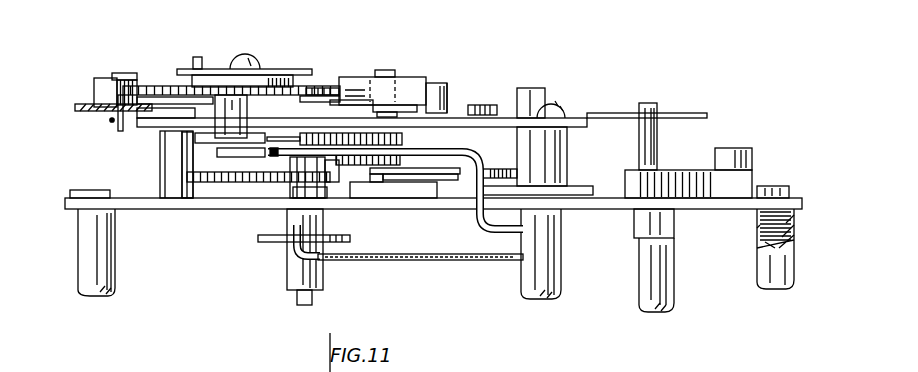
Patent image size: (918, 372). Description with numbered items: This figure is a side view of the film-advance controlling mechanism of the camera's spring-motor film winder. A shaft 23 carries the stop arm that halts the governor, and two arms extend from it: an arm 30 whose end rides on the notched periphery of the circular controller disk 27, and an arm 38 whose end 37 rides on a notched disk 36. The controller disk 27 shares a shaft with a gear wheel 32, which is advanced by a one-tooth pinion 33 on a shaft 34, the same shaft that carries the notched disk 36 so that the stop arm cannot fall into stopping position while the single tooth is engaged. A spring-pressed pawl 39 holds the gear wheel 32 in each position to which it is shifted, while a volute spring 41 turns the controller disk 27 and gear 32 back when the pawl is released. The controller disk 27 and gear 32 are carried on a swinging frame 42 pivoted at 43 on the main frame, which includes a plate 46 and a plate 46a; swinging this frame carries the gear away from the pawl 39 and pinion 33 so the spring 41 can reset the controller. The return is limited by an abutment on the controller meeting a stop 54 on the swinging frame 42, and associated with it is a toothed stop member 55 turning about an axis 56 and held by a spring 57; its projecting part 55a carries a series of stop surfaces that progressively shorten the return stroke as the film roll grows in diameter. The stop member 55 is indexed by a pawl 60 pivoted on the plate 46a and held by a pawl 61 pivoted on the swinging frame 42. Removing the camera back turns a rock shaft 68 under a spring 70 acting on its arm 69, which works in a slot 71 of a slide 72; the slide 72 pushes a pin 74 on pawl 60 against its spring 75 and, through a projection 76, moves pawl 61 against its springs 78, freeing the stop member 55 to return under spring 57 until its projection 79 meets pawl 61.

The shaft 23 is at (536, 281).
The controller disk 27 is at (233, 156).
The arm 30 is at (478, 211).
The gear wheel 32 is at (267, 182).
The one-tooth pinion 33 is at (326, 180).
The shaft 34 is at (297, 280).
The notched disk 36 is at (272, 237).
The end of arm 37 is at (302, 237).
The arm 38 is at (418, 264).
The pawl 39 is at (446, 199).
The volute spring 41 is at (402, 144).
The swinging frame 42 is at (586, 145).
The pivot 43 is at (546, 93).
The plate 46 is at (702, 201).
The plate 46a is at (82, 104).
The stop 54 is at (318, 100).
The stop member 55 is at (165, 86).
The projecting part 55a is at (197, 140).
The axis 56 is at (258, 67).
The spring 57 is at (220, 82).
The pawl 60 is at (100, 78).
The pawl 61 is at (406, 104).
The rock shaft 68 is at (672, 303).
The arm 69 is at (642, 216).
The spring 70 is at (683, 175).
The slot 71 is at (662, 110).
The slide 72 is at (697, 113).
The pin 74 is at (119, 131).
The spring 75 is at (110, 121).
The projection 76 is at (449, 95).
The springs 78 is at (414, 103).
The projection 79 is at (312, 95).